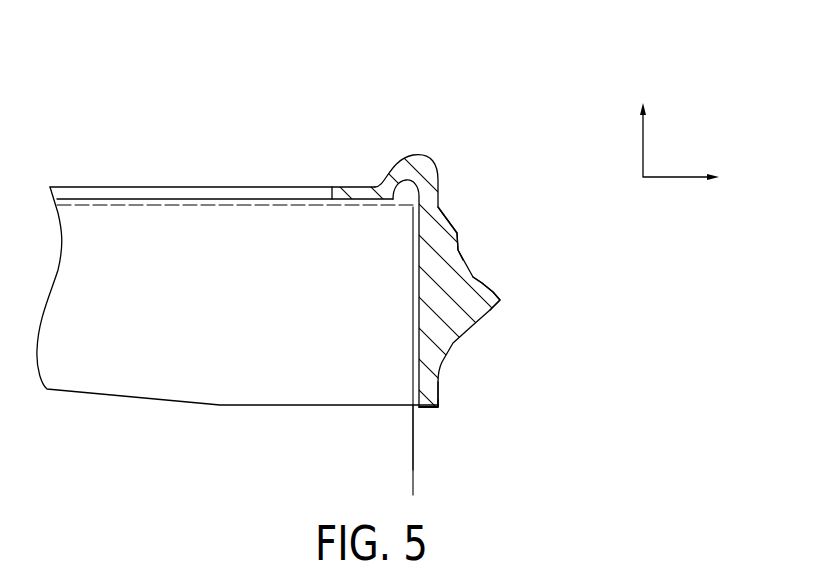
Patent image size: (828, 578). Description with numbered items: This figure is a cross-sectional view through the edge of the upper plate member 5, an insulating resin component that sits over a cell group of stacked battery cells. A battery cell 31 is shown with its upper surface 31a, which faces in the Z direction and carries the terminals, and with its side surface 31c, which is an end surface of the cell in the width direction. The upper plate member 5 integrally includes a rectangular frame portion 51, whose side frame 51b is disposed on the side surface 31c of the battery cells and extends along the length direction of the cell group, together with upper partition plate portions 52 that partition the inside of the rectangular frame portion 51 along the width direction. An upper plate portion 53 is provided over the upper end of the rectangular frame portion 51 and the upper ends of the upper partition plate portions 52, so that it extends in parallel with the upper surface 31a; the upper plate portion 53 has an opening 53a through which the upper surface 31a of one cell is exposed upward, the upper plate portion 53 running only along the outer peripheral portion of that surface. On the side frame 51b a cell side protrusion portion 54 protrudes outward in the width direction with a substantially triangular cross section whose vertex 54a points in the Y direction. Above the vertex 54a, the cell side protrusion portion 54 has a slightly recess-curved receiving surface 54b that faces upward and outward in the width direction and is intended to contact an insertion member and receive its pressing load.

The upper plate member 5 is at (223, 118).
The battery cell 31 is at (413, 472).
The upper surface 31a is at (103, 205).
The side surface 31c is at (413, 437).
The rectangular frame portion 51 is at (440, 392).
The side frame 51b is at (445, 392).
The upper partition plate portion 52 is at (163, 236).
The upper plate portion 53 is at (350, 187).
The opening 53a is at (278, 197).
The cell side protrusion portion 54 is at (502, 330).
The vertex 54a is at (500, 300).
The receiving surface 54b is at (463, 260).